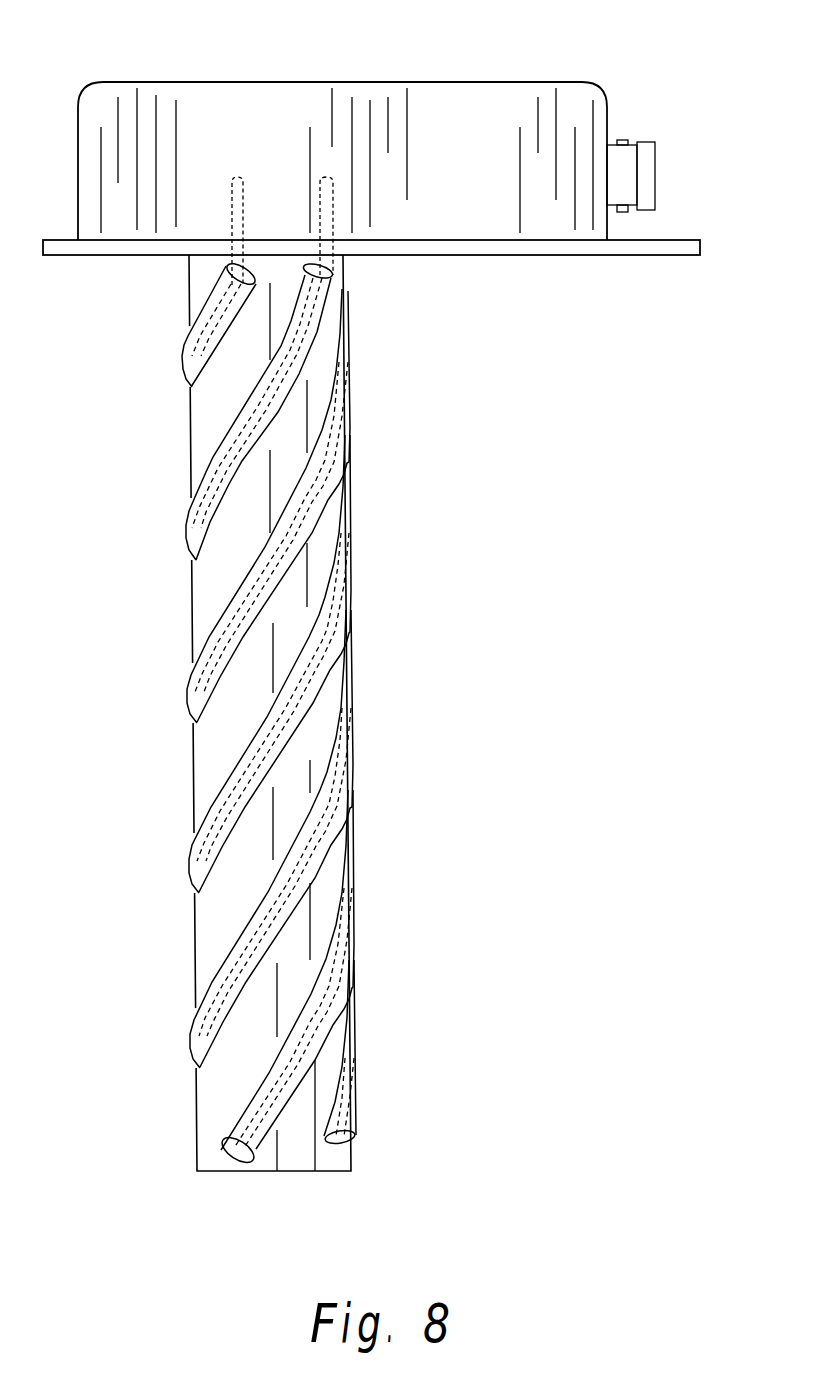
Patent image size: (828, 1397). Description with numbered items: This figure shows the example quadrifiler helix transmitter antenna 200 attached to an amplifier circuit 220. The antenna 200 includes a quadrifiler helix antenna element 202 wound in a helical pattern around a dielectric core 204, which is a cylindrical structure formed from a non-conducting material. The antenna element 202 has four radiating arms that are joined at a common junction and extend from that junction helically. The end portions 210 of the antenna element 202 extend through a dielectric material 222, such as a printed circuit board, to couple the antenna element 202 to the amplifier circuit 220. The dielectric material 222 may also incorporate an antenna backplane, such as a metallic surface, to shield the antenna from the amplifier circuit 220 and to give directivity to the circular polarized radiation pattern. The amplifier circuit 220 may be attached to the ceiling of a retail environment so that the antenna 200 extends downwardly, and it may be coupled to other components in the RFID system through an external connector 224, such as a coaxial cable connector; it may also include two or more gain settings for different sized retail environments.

The transmitter antenna 200 is at (376, 587).
The quadrifiler helix antenna element 202 is at (298, 1052).
The dielectric core 204 is at (297, 780).
The end portions 210 is at (327, 208).
The amplifier circuit 220 is at (460, 123).
The dielectric material 222 is at (460, 247).
The external connector 224 is at (655, 147).